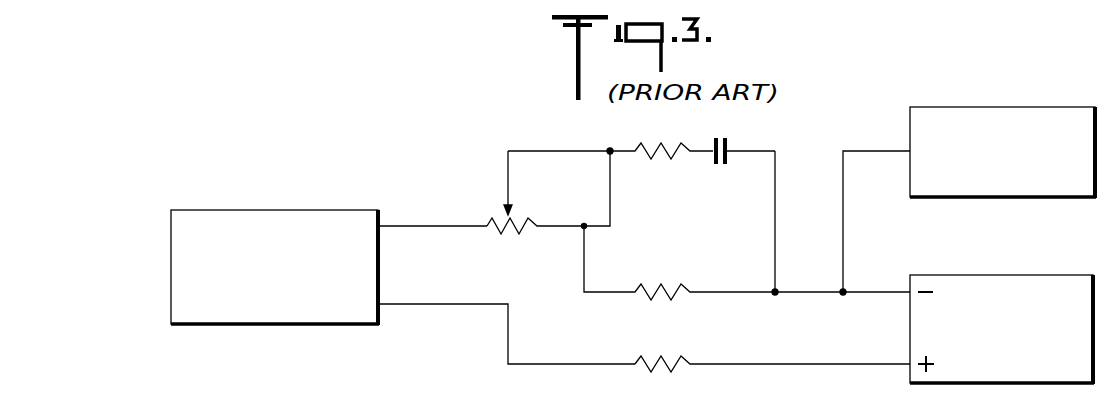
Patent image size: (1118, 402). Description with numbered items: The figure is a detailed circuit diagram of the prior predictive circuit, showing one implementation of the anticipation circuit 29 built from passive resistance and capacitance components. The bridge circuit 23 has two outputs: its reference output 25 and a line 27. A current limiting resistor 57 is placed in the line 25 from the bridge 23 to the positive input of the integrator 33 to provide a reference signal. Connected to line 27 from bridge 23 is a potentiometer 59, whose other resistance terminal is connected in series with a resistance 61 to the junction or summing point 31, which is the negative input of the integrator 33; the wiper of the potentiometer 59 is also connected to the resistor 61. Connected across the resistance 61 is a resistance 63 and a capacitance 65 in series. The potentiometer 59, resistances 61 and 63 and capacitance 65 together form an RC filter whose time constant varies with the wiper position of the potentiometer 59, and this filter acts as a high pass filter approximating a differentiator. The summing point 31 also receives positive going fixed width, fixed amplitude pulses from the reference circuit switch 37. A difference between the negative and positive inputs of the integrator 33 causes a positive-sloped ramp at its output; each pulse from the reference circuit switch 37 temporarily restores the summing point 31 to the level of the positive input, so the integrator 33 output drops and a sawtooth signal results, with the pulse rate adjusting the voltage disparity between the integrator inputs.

The bridge circuit 23 is at (288, 186).
The reference output 25 is at (407, 308).
The line 27 is at (414, 222).
The anticipation circuit 29 is at (789, 136).
The summing point 31 is at (840, 298).
The integrator 33 is at (967, 275).
The reference circuit switch 37 is at (1008, 82).
The current limiting resistor 57 is at (661, 356).
The potentiometer 59 is at (500, 235).
The resistance 61 is at (658, 284).
The resistance 63 is at (673, 162).
The capacitance 65 is at (714, 174).